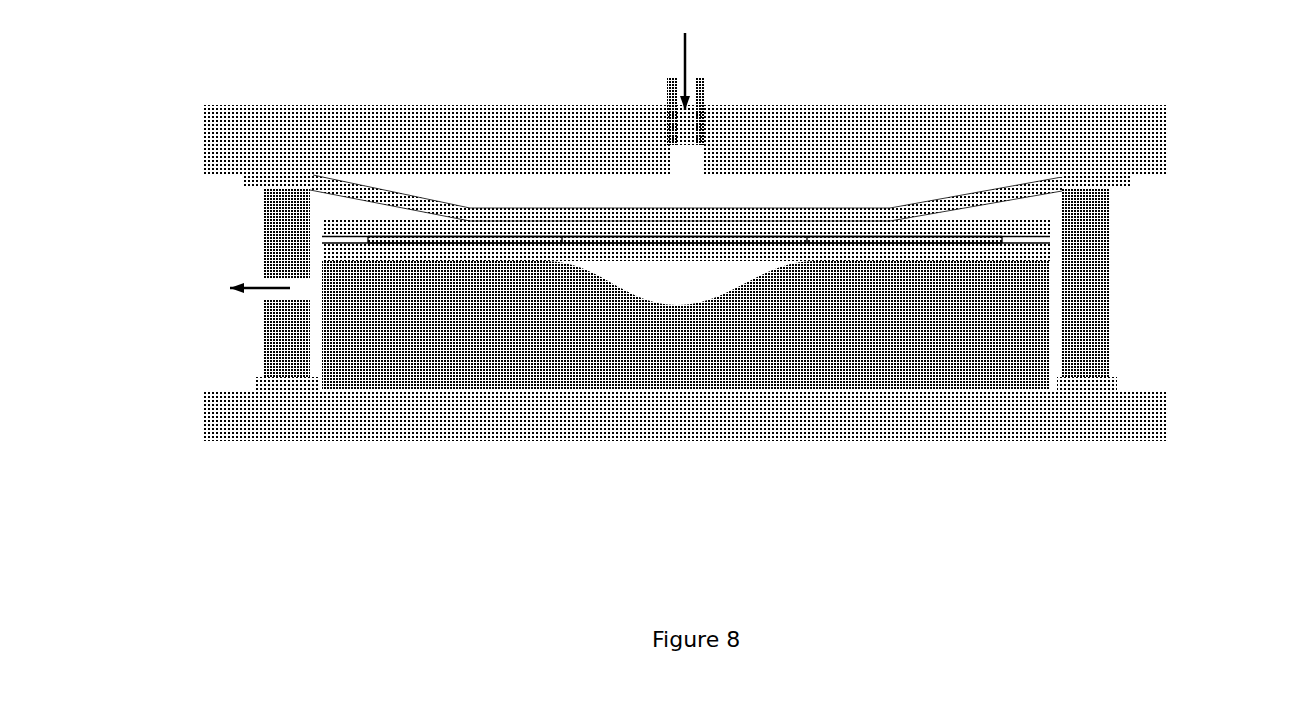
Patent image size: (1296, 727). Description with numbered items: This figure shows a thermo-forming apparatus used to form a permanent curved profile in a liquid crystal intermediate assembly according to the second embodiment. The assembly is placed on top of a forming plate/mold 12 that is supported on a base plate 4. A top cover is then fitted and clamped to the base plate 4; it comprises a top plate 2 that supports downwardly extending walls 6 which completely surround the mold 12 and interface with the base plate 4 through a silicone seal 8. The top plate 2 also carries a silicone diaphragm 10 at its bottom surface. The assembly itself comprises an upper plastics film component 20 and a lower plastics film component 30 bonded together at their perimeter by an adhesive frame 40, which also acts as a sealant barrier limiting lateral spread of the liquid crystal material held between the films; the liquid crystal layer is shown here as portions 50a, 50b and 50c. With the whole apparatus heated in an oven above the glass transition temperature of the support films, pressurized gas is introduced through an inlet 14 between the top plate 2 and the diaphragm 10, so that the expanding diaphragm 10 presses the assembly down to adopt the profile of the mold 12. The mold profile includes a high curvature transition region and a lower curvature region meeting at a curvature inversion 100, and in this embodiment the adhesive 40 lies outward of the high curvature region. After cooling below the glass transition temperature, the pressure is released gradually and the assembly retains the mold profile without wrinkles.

The top plate 2 is at (942, 119).
The base plate 4 is at (876, 441).
The walls 6 is at (1113, 222).
The silicone seal 8 is at (1121, 375).
The silicone diaphragm 10 is at (1133, 185).
The forming plate/mold 12 is at (668, 345).
The inlet 14 is at (665, 87).
The upper plastics film component 20 is at (460, 213).
The lower plastics film component 30 is at (418, 418).
The adhesive frame 40 is at (323, 241).
The film outer portion 50a is at (537, 235).
The film central portion 50b is at (687, 236).
The film edge portion 50c is at (447, 243).
The curvature inversion 100 is at (562, 267).